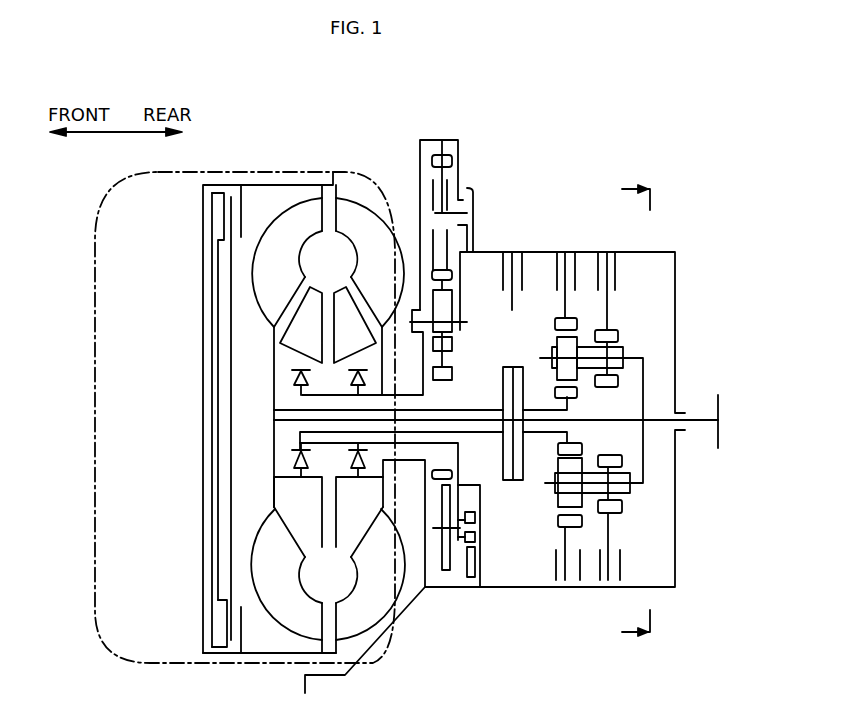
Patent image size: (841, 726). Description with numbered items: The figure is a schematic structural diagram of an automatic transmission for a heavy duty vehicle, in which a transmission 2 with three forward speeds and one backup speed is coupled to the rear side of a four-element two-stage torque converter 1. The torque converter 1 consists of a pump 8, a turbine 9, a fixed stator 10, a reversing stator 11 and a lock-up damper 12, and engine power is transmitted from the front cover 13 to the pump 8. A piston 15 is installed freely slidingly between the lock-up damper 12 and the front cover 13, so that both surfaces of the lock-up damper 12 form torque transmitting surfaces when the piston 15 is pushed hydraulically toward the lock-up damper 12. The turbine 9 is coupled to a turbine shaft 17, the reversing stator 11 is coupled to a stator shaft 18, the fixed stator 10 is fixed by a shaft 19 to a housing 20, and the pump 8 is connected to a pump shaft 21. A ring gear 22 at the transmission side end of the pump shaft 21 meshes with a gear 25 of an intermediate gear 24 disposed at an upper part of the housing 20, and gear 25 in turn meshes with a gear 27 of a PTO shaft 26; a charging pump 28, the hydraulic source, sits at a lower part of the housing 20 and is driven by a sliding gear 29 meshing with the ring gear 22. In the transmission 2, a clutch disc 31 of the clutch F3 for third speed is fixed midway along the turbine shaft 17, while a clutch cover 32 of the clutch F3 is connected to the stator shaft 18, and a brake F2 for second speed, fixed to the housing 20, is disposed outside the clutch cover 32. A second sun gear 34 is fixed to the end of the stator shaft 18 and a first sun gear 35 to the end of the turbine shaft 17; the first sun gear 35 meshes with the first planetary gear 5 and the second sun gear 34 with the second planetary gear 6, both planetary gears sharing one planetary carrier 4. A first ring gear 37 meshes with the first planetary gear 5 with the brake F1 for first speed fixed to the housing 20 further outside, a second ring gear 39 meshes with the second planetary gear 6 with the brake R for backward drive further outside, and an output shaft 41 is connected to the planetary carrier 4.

The torque converter 1 is at (237, 162).
The transmission 2 is at (720, 170).
The planetary carrier 4 is at (625, 488).
The first planetary gear 5 is at (612, 507).
The second planetary gear 6 is at (575, 357).
The pump 8 is at (379, 285).
The turbine 9 is at (275, 289).
The fixed stator 10 is at (362, 340).
The reversing stator 11 is at (310, 342).
The lock-up damper 12 is at (231, 232).
The front cover 13 is at (203, 296).
The piston 15 is at (213, 637).
The turbine shaft 17 is at (283, 422).
The stator shaft 18 is at (312, 392).
The shaft 19 is at (292, 380).
The housing 20 is at (488, 252).
The pump shaft 21 is at (437, 475).
The ring gear 22 is at (440, 487).
The intermediate gear 24 is at (437, 320).
The gear 25 is at (433, 300).
The PTO shaft 26 is at (470, 192).
The gear 27 is at (443, 155).
The charging pump 28 is at (472, 578).
The sliding gear 29 is at (445, 572).
The clutch disc 31 is at (503, 446).
The clutch cover 32 is at (497, 480).
The second sun gear 34 is at (573, 393).
The first sun gear 35 is at (612, 462).
The first ring gear 37 is at (574, 523).
The second ring gear 39 is at (570, 325).
The output shaft 41 is at (718, 448).
The brake for first speed F1 is at (618, 272).
The brake for second speed F2 is at (528, 272).
The clutch for third speed F3 is at (505, 391).
The brake for backward drive R is at (575, 275).